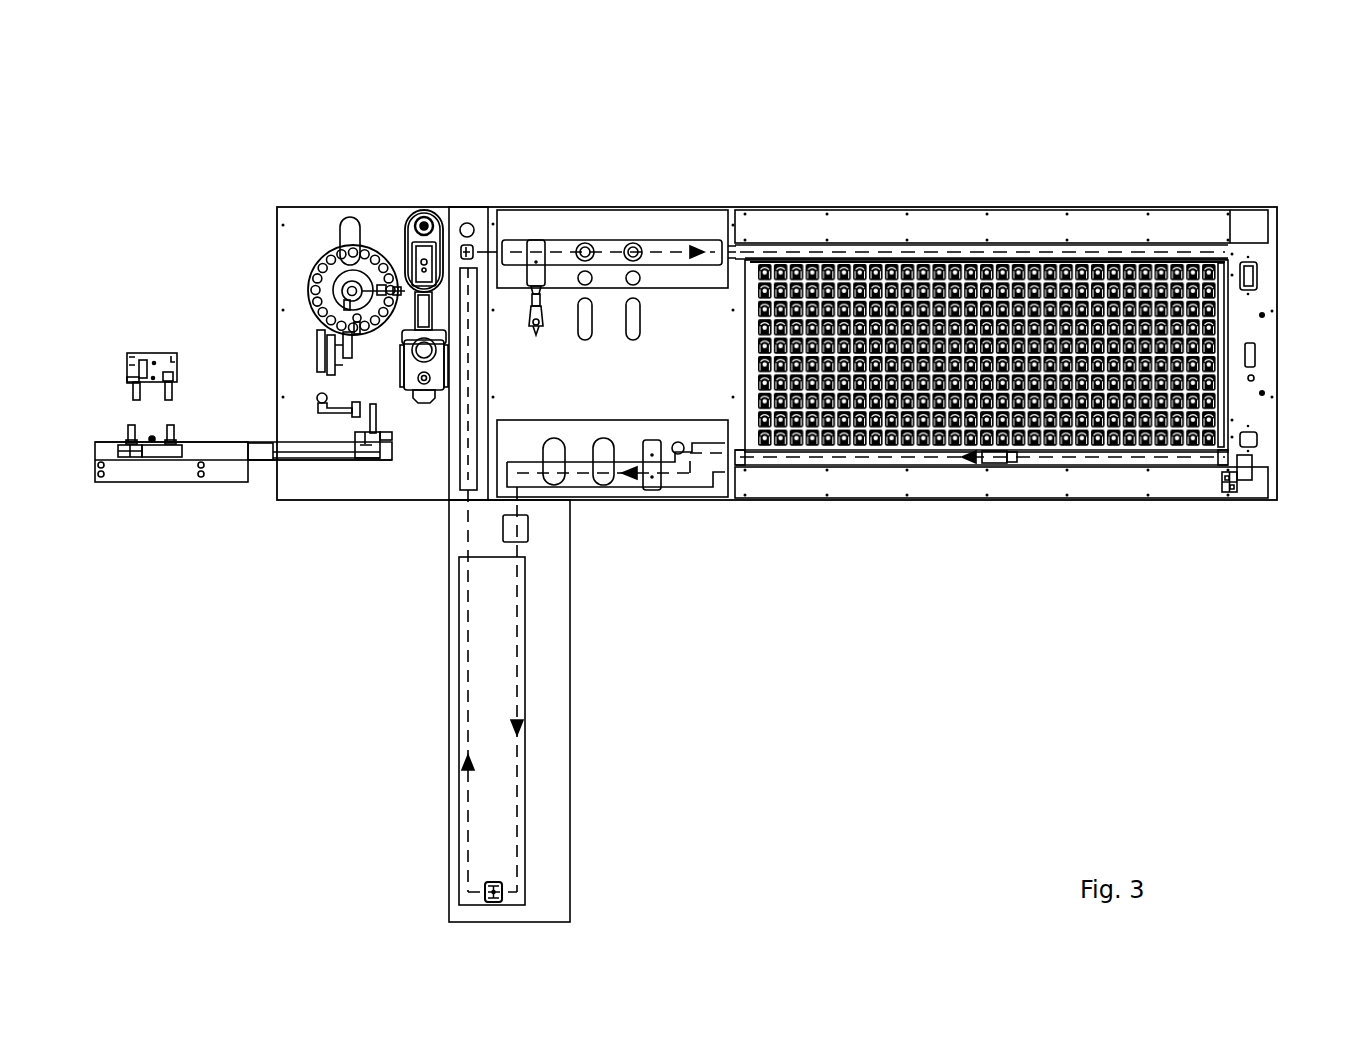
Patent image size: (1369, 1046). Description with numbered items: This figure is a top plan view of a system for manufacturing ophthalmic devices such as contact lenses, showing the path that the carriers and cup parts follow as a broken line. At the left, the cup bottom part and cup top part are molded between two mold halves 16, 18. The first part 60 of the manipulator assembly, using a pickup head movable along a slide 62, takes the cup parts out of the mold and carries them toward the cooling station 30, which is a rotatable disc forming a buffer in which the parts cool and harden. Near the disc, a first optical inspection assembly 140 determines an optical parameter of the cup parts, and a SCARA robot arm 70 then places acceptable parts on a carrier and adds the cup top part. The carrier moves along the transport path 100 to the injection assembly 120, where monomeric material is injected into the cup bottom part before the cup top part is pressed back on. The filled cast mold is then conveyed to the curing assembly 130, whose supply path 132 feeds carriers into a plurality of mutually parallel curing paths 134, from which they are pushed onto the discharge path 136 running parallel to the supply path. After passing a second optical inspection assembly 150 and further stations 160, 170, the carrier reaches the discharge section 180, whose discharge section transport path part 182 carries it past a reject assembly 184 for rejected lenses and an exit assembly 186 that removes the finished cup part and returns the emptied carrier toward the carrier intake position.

The mold half 16 is at (152, 353).
The mold half 18 is at (130, 425).
The cooling station 30 is at (312, 283).
The first part of the manipulator assembly 60 is at (417, 430).
The slide 62 is at (225, 462).
The robot arm 70 is at (434, 192).
The transport path 100 is at (680, 215).
The injection assembly 120 is at (546, 230).
The curing assembly 130 is at (1017, 209).
The supply path 132 is at (1183, 220).
The curing paths 134 is at (1217, 385).
The discharge path 136 is at (1170, 455).
The first optical inspection assembly 140 is at (340, 215).
The second optical inspection assembly 150 is at (553, 483).
The third station 160 is at (665, 483).
The second station 170 is at (605, 483).
The discharge section 180 is at (572, 735).
The discharge section transport path part 182 is at (525, 812).
The reject assembly 184 is at (503, 533).
The exit assembly 186 is at (485, 890).